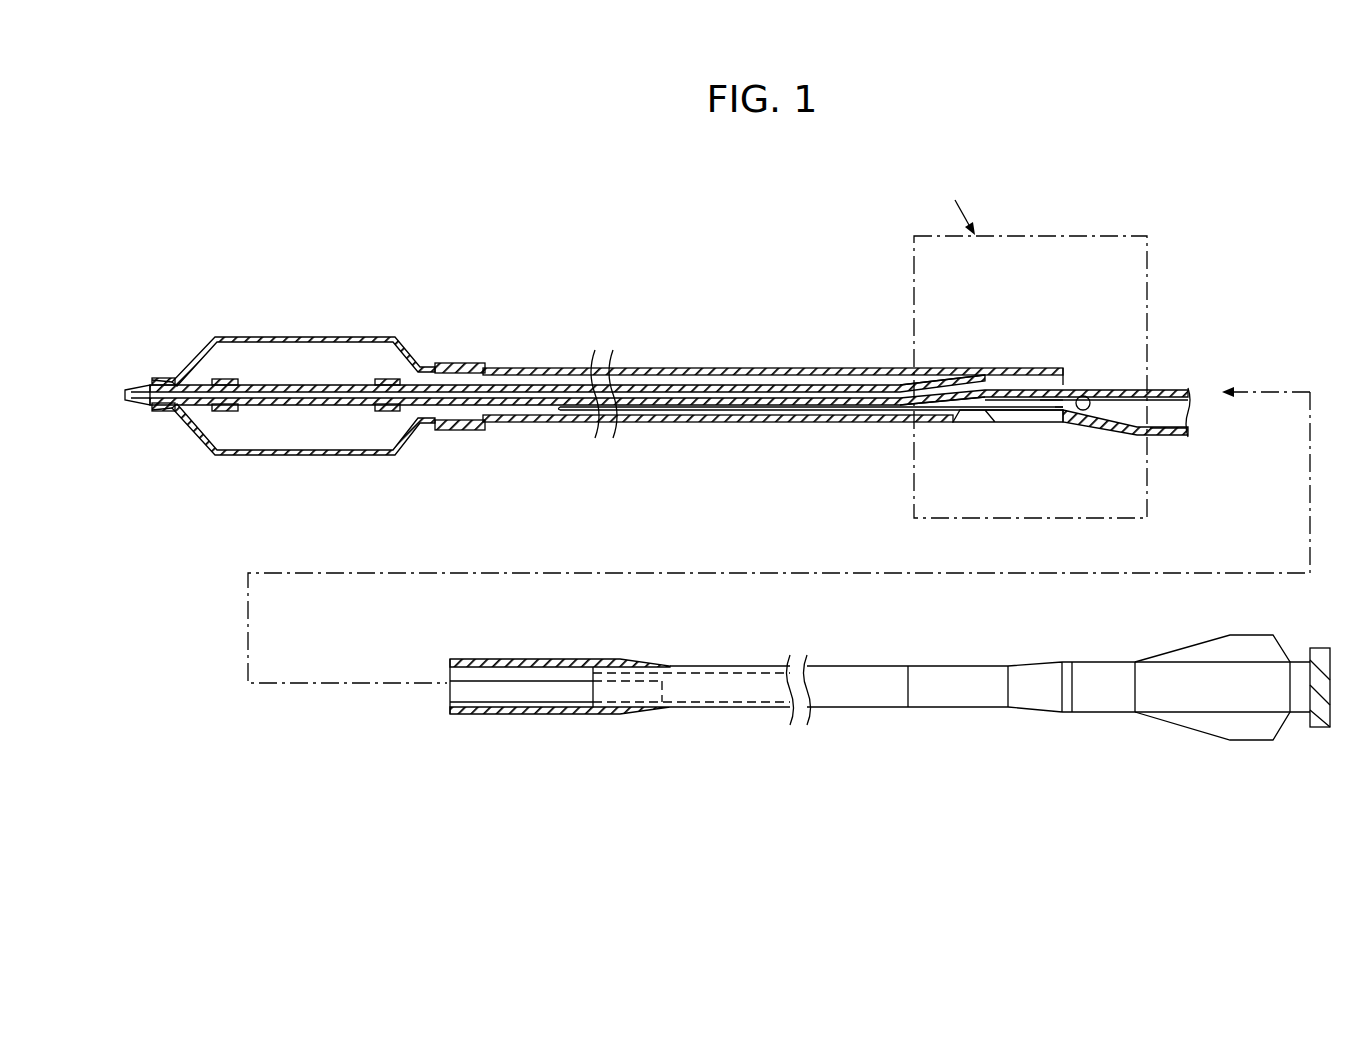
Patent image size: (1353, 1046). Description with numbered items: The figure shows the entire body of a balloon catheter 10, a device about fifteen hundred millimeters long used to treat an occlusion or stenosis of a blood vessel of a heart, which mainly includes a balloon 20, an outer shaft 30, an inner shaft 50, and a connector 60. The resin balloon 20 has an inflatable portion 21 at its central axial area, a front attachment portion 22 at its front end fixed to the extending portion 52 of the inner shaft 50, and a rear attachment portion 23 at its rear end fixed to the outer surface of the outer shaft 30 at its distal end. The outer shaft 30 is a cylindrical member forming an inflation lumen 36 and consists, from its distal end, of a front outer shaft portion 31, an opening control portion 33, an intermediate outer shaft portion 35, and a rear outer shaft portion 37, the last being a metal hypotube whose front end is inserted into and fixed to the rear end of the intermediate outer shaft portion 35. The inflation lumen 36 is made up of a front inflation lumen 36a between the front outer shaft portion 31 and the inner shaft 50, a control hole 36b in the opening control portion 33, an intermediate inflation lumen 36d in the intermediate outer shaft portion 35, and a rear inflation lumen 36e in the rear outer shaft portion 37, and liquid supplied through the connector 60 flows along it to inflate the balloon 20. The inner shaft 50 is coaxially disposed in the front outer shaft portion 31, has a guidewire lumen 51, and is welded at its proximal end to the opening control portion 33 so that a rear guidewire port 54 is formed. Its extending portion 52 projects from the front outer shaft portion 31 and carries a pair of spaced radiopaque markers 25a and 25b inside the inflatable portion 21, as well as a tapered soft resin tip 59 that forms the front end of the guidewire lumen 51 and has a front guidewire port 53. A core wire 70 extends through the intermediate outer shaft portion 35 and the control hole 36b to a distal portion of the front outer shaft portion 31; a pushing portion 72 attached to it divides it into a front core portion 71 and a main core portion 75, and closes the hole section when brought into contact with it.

The balloon catheter 10 is at (736, 253).
The balloon 20 is at (328, 322).
The inflatable portion 21 is at (285, 340).
The front attachment portion 22 is at (167, 380).
The rear attachment portion 23 is at (474, 362).
The radiopaque marker 25a is at (228, 411).
The radiopaque marker 25b is at (386, 411).
The outer shaft 30 is at (676, 356).
The front outer shaft portion 31 is at (848, 420).
The opening control portion 33 is at (966, 422).
The intermediate outer shaft portion 35 is at (1157, 430).
The inflation lumen 36 is at (770, 380).
The front inflation lumen 36a is at (665, 414).
The control hole 36b is at (1018, 400).
The intermediate inflation lumen 36d is at (555, 667).
The rear inflation lumen 36e is at (718, 700).
The rear outer shaft portion 37 is at (868, 692).
The inner shaft 50 is at (524, 370).
The guidewire lumen 51 is at (828, 393).
The extending portion 52 is at (262, 385).
The front guidewire port 53 is at (128, 393).
The rear guidewire port 54 is at (1068, 382).
The tip 59 is at (147, 380).
The connector 60 is at (1250, 645).
The core wire 70 is at (1168, 380).
The front core portion 71 is at (1048, 405).
The pushing portion 72 is at (1085, 395).
The main core portion 75 is at (1168, 434).